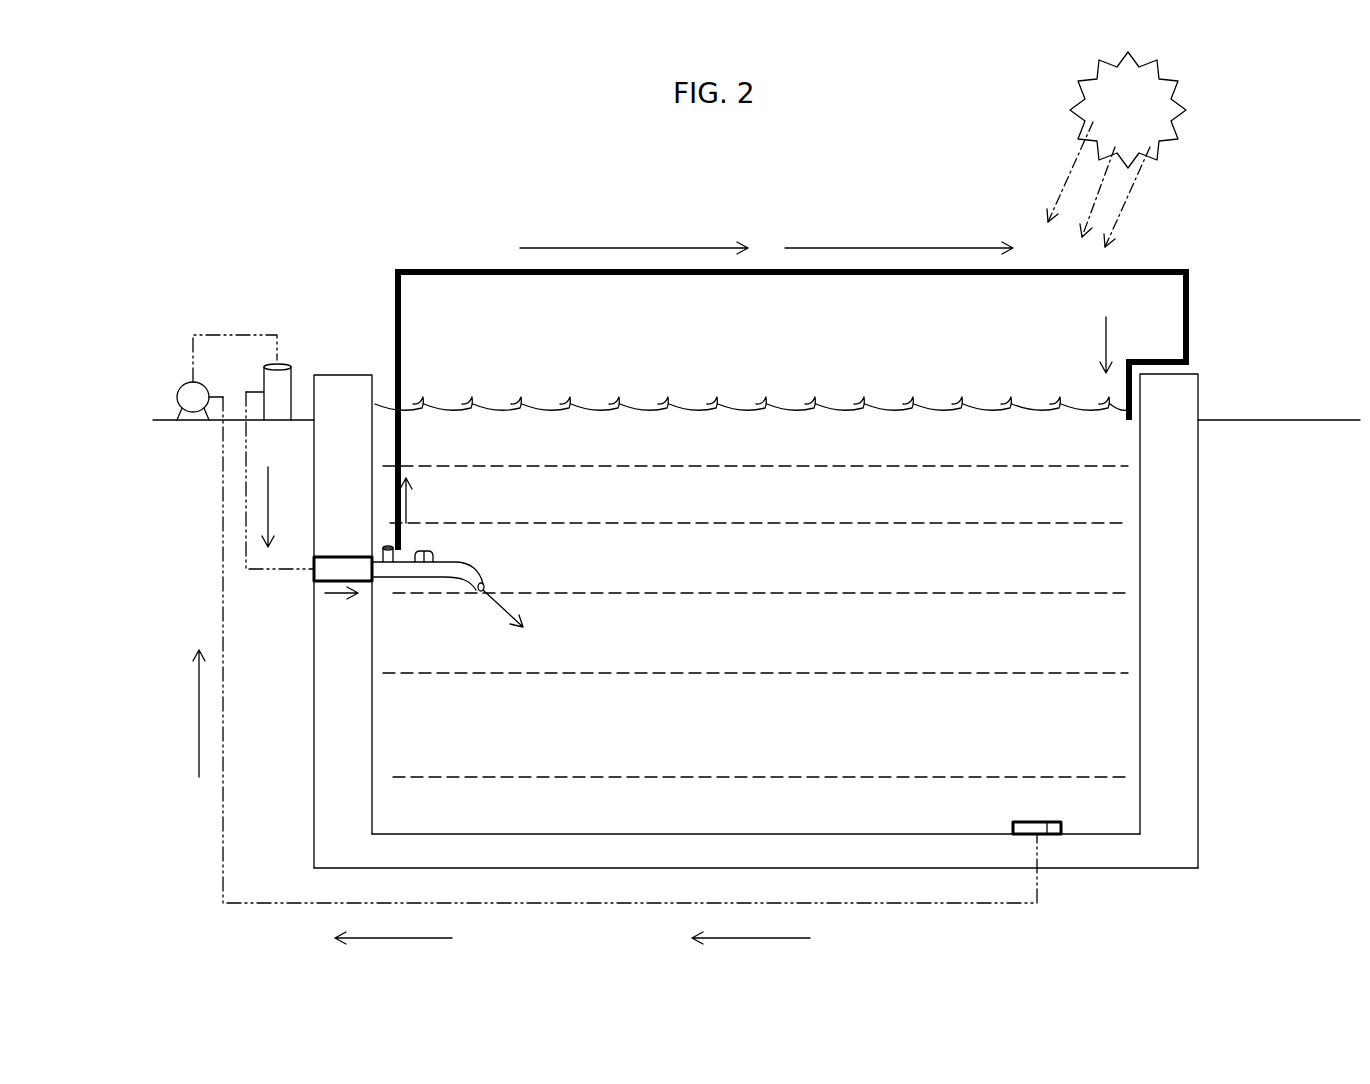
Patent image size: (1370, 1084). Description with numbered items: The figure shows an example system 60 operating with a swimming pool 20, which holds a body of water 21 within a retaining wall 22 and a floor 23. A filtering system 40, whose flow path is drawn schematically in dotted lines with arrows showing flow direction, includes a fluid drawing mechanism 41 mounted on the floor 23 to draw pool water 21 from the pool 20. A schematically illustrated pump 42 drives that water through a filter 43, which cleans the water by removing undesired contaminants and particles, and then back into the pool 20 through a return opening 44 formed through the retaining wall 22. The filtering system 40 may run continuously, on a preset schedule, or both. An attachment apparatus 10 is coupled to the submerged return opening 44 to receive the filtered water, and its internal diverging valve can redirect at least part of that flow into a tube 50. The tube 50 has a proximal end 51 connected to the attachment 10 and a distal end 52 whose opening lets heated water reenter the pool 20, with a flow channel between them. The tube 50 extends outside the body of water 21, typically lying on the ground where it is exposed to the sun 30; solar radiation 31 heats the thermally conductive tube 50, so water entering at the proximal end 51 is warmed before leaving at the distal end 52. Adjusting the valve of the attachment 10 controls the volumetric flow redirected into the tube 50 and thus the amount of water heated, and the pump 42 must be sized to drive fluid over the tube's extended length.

The attachment apparatus 10 is at (447, 562).
The swimming pool 20 is at (375, 325).
The body of water 21 is at (802, 571).
The retaining wall 22 is at (352, 397).
The floor 23 is at (865, 847).
The sun 30 is at (1150, 122).
The solar radiation 31 is at (1164, 194).
The filtering system 40 is at (214, 302).
The fluid drawing mechanism 41 is at (1047, 836).
The pump 42 is at (193, 420).
The filter 43 is at (280, 387).
The return opening 44 is at (343, 557).
The tube 50 is at (440, 268).
The proximal end 51 is at (393, 547).
The distal end 52 is at (1127, 418).
The system 60 is at (496, 175).